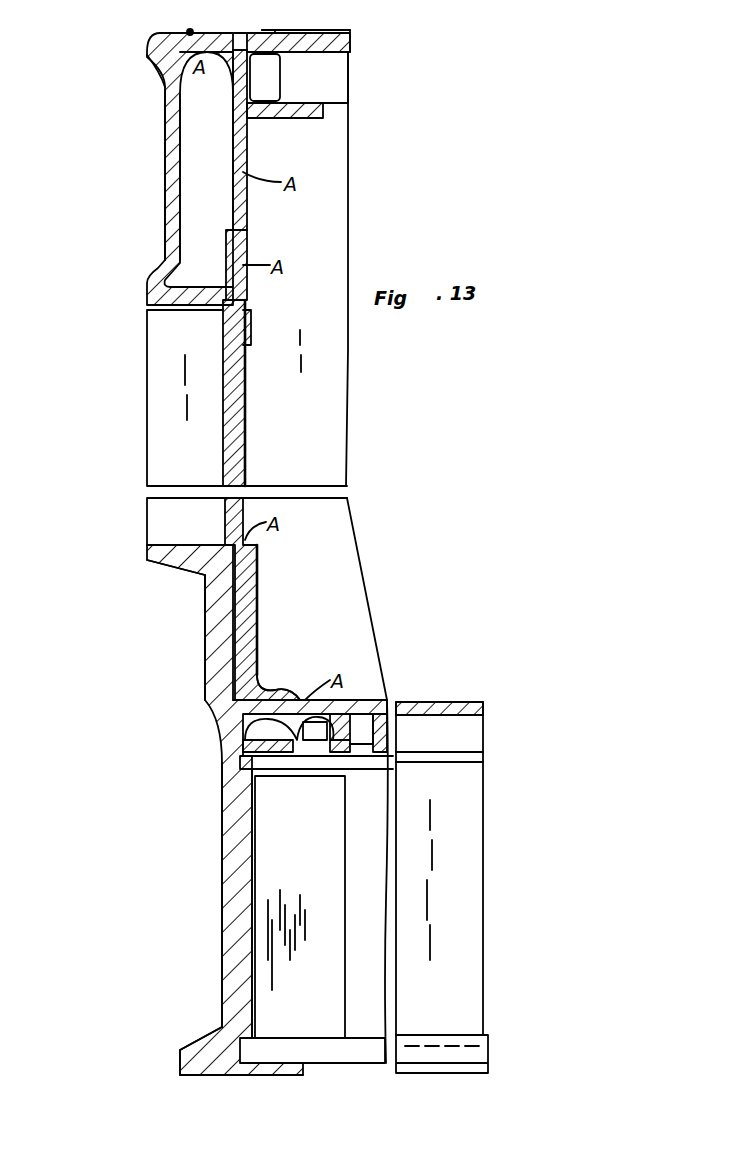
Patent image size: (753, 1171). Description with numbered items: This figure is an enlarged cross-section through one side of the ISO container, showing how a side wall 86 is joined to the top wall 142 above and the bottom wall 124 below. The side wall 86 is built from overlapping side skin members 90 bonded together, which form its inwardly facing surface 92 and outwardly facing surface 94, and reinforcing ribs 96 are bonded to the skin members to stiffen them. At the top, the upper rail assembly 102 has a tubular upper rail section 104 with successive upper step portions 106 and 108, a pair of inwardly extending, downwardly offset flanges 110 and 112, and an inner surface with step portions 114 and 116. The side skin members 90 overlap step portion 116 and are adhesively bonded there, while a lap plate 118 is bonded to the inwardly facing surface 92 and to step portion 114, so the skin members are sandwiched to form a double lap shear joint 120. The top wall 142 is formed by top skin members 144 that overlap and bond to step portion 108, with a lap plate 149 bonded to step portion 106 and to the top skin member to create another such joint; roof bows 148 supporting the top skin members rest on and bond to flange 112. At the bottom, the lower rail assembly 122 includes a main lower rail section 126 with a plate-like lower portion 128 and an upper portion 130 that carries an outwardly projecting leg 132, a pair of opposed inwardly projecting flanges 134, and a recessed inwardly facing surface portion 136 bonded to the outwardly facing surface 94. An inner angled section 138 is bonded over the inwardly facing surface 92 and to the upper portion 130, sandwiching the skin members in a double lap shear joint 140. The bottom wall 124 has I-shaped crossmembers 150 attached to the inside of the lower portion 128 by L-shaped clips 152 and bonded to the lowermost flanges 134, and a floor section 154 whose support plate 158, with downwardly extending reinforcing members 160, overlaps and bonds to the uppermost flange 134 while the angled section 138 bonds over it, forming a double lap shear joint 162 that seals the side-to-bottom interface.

The side wall 86 is at (110, 425).
The side skin members 90 is at (245, 395).
The inwardly facing surface 92 is at (245, 452).
The outwardly facing surface 94 is at (232, 512).
The reinforcing ribs 96 is at (150, 330).
The upper rail assembly 102 is at (130, 37).
The tubular upper rail section 104 is at (166, 152).
The upper step portion 106 is at (150, 62).
The upper step portion 108 is at (257, 33).
The flange 110 is at (280, 68).
The flange 112 is at (325, 117).
The step portion 114 is at (245, 165).
The step portion 116 is at (237, 240).
The lap plate 118 is at (245, 333).
The double lap shear joint 120 is at (320, 238).
The lower rail assembly 122 is at (185, 773).
The bottom wall 124 is at (448, 615).
The main lower rail section 126 is at (222, 852).
The plate-like lower portion 128 is at (222, 990).
The upper portion 130 is at (210, 685).
The outwardly projecting leg 132 is at (150, 552).
The inwardly projecting flanges 134 is at (293, 745).
The recessed inwardly facing surface portion 136 is at (233, 607).
The inner angled section 138 is at (258, 652).
The double lap shear joint 140 is at (297, 573).
The top wall 142 is at (354, 43).
The top skin members 144 is at (345, 33).
The roof bows 148 is at (335, 88).
The lap plate 149 is at (180, 33).
The crossmembers 150 is at (355, 1055).
The L-shaped clips 152 is at (320, 870).
The floor section 154 is at (487, 725).
The support plate 158 is at (430, 702).
The reinforcing members 160 is at (355, 750).
The double lap shear joint 162 is at (305, 680).